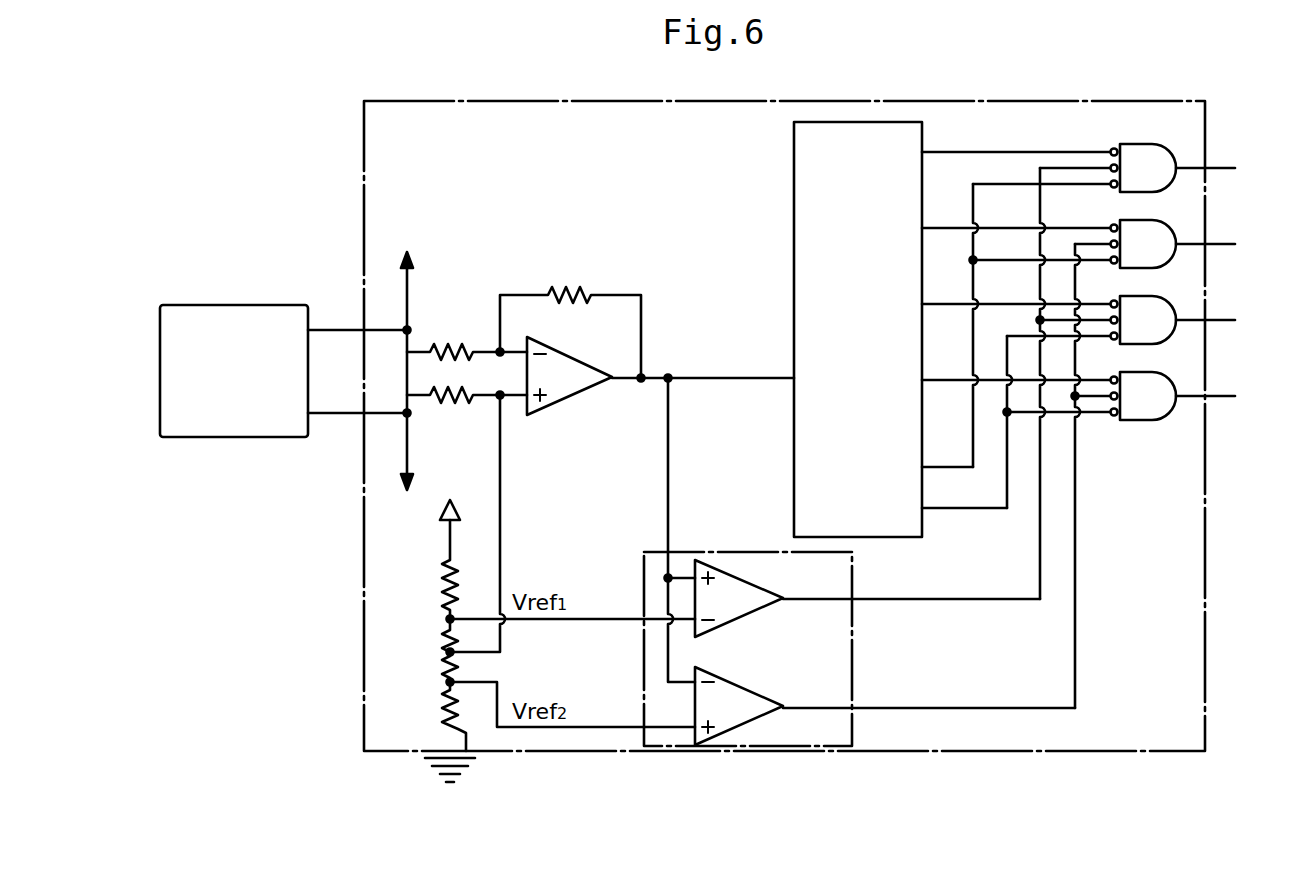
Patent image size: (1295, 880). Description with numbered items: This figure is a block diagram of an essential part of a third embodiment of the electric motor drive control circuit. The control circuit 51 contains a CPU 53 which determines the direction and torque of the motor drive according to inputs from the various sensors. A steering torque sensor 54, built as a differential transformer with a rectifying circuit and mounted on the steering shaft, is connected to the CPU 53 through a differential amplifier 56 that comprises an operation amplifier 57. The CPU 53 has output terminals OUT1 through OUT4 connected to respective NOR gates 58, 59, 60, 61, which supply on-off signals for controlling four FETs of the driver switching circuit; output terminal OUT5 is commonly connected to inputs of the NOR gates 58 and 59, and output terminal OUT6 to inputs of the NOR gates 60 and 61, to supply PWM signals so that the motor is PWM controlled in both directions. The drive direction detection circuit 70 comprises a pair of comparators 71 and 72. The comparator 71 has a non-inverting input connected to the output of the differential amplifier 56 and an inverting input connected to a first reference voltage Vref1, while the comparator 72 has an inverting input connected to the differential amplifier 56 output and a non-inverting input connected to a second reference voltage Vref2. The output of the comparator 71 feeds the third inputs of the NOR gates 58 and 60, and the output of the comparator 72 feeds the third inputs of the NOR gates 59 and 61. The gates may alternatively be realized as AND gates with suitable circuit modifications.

The control circuit 51 is at (364, 196).
The CPU 53 is at (794, 290).
The steering torque sensor 54 is at (236, 305).
The differential amplifier 56 is at (565, 265).
The operation amplifier 57 is at (578, 393).
The NOR gate 58 is at (1182, 162).
The NOR gate 59 is at (1182, 238).
The NOR gate 60 is at (1182, 314).
The NOR gate 61 is at (1182, 390).
The drive direction detection circuit 70 is at (745, 551).
The comparator 71 is at (757, 612).
The comparator 72 is at (760, 693).